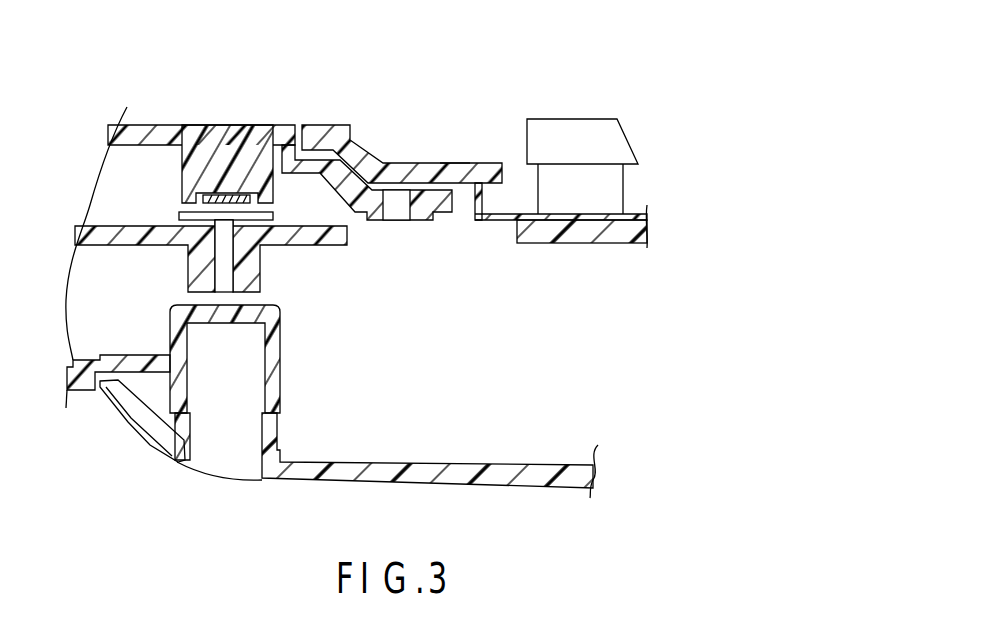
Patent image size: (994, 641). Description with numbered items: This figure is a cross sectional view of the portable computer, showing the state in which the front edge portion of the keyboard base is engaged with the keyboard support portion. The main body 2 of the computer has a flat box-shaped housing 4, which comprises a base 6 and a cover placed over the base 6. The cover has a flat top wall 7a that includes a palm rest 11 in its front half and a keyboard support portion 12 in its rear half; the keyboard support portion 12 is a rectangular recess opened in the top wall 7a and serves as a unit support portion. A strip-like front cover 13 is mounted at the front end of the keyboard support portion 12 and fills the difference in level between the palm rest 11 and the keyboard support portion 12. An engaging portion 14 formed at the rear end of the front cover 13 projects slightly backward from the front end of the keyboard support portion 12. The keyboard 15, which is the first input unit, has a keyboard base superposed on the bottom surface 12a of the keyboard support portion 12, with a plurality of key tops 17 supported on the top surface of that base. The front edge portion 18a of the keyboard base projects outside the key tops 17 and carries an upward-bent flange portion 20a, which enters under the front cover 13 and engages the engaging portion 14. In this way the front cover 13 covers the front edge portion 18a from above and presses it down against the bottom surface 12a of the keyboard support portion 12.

The main body 2 is at (172, 458).
The housing 4 is at (113, 417).
The base 6 is at (477, 488).
The top wall 7a is at (108, 137).
The palm rest 11 is at (183, 125).
The keyboard support portion 12 is at (458, 185).
The bottom surface 12a is at (603, 243).
The front cover 13 is at (390, 162).
The engaging portion 14 is at (495, 163).
The keyboard 15 is at (608, 113).
The key tops 17 is at (627, 138).
The front edge portion 18a is at (478, 222).
The flange portion 20a is at (453, 163).